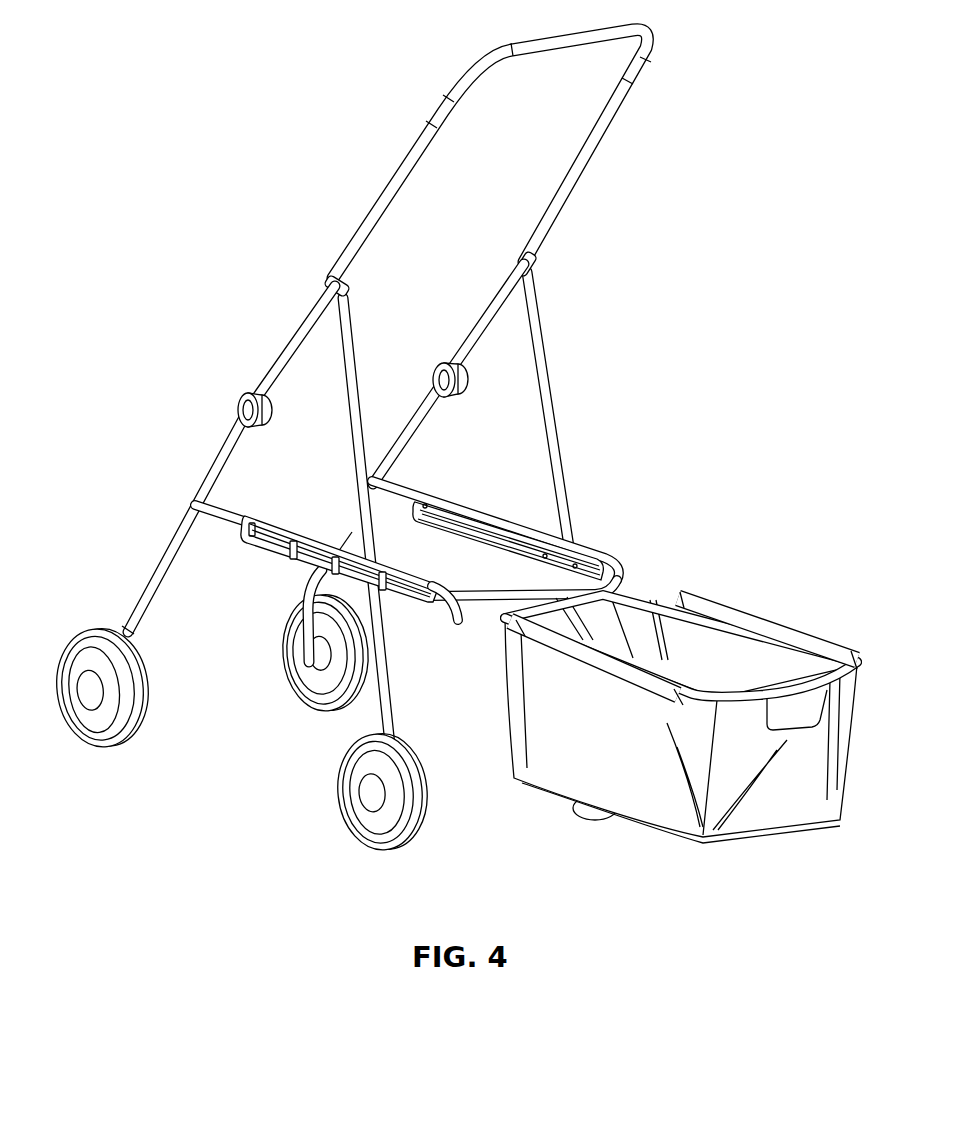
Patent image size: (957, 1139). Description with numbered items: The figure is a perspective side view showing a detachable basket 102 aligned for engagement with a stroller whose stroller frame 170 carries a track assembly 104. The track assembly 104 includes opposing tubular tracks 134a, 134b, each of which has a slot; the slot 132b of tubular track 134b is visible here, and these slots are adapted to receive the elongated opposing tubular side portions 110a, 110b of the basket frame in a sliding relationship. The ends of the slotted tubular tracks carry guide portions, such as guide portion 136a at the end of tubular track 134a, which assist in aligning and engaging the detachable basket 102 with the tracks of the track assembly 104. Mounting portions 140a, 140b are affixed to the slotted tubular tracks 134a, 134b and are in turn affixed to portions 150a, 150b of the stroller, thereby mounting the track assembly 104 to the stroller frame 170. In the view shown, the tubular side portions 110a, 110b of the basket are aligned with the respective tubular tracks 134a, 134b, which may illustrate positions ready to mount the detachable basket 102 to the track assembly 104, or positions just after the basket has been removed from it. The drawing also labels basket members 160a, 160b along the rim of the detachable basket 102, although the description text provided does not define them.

The detachable basket 102 is at (632, 858).
The track assembly 104 is at (614, 524).
The tubular side portion 110a is at (693, 686).
The tubular side portion 110b is at (674, 594).
The slot 132b is at (518, 558).
The tubular track 134a is at (272, 553).
The tubular track 134b is at (440, 525).
The guide portion 136a is at (436, 606).
The mounting portion 140a is at (295, 520).
The mounting portion 140b is at (486, 506).
The portion of stroller 150a is at (228, 498).
The portion of stroller 150b is at (420, 478).
The front handle 160a is at (600, 666).
The rear handle 160b is at (782, 606).
The stroller frame 170 is at (392, 178).